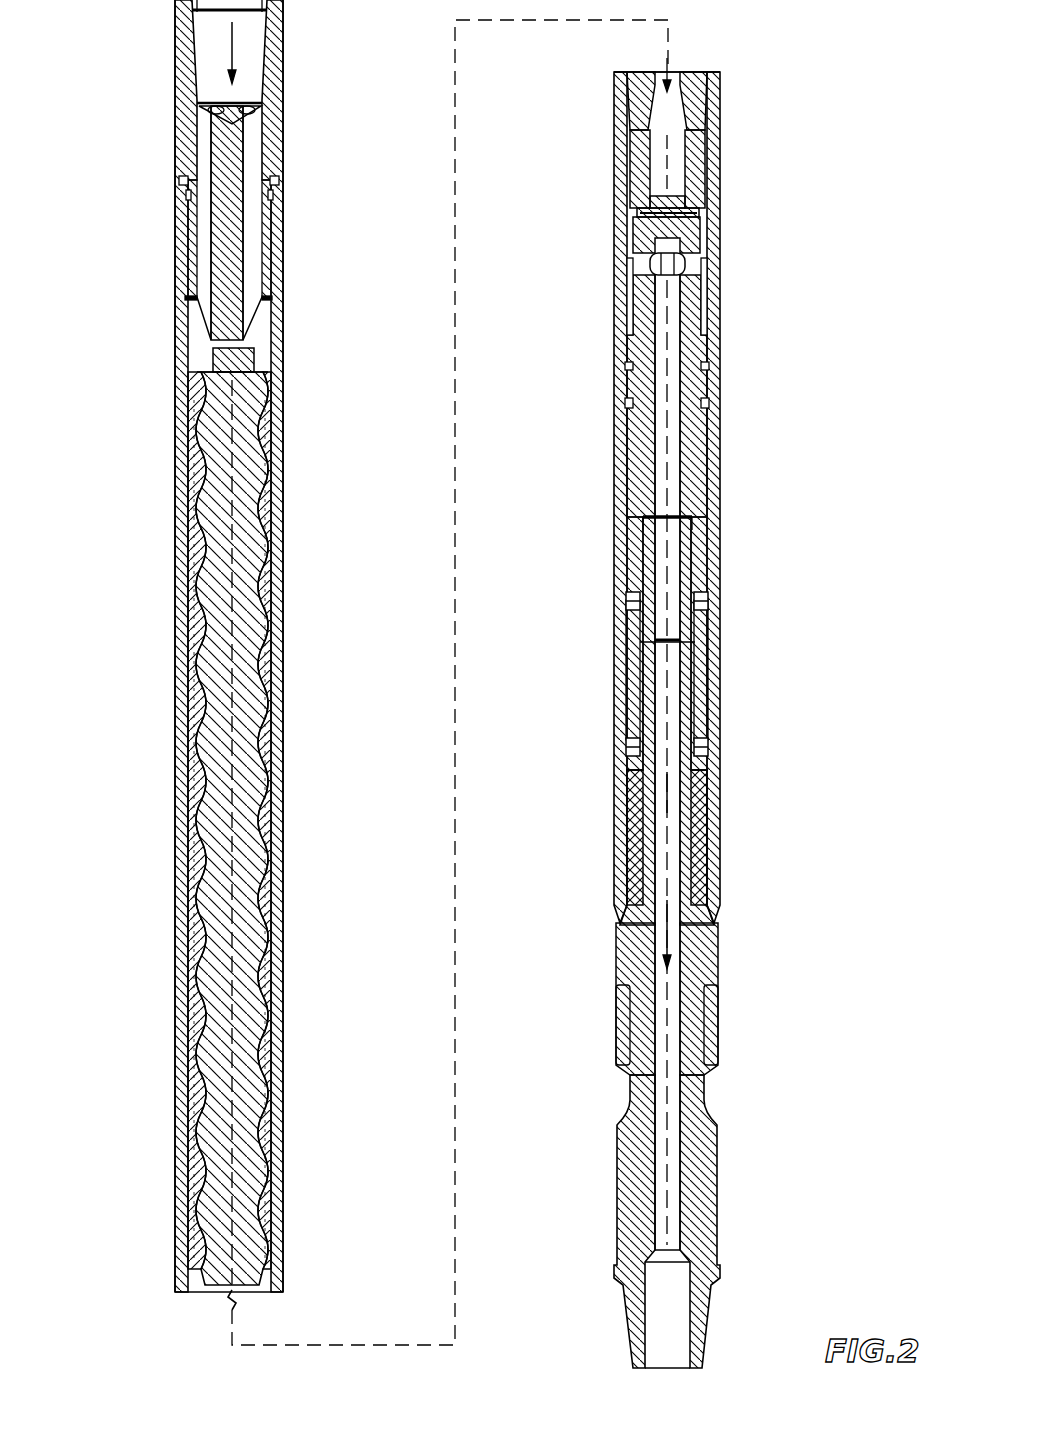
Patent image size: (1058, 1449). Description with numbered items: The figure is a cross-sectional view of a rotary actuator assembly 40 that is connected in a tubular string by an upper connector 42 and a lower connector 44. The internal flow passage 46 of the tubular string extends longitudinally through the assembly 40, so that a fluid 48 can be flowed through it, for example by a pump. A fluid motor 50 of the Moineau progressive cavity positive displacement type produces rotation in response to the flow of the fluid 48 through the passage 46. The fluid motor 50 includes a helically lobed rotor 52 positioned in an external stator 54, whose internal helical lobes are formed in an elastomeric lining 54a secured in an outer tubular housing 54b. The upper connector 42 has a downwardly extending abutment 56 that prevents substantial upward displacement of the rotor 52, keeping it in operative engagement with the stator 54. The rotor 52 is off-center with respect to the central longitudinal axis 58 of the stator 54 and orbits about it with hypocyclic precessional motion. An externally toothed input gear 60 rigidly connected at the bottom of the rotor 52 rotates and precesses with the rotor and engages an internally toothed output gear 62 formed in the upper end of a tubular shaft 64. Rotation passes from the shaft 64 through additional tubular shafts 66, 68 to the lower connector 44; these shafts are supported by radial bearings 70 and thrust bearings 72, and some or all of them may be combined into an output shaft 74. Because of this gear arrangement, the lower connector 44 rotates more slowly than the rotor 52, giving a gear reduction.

The rotary actuator assembly 40 is at (808, 56).
The upper connector 42 is at (197, 42).
The lower connector 44 is at (716, 1240).
The internal flow passage 46 is at (212, 90).
The fluid 48 is at (233, 40).
The fluid motor 50 is at (176, 841).
The helically lobed rotor 52 is at (187, 603).
The stator 54 is at (185, 1020).
The elastomeric lining 54a is at (185, 1176).
The outer tubular housing 54b is at (186, 1222).
The abutment 56 is at (232, 343).
The central longitudinal axis 58 is at (230, 443).
The input gear 60 is at (690, 170).
The output gear 62 is at (690, 200).
The tubular shaft 64 is at (700, 430).
The tubular shaft 66 is at (705, 650).
The tubular shaft 68 is at (700, 893).
The radial bearings 70 is at (708, 298).
The thrust bearings 72 is at (700, 604).
The output shaft 74 is at (708, 1094).